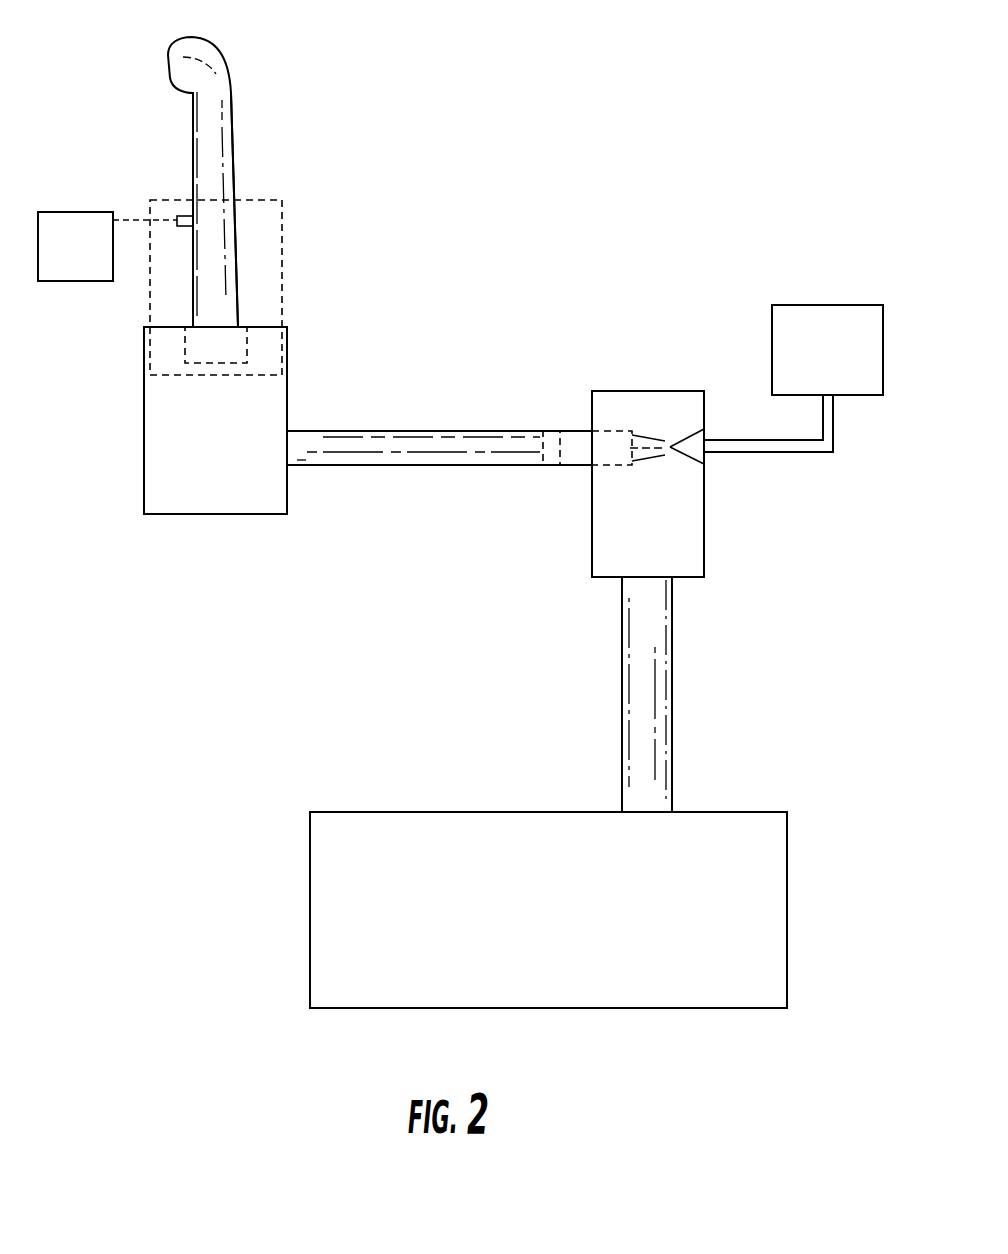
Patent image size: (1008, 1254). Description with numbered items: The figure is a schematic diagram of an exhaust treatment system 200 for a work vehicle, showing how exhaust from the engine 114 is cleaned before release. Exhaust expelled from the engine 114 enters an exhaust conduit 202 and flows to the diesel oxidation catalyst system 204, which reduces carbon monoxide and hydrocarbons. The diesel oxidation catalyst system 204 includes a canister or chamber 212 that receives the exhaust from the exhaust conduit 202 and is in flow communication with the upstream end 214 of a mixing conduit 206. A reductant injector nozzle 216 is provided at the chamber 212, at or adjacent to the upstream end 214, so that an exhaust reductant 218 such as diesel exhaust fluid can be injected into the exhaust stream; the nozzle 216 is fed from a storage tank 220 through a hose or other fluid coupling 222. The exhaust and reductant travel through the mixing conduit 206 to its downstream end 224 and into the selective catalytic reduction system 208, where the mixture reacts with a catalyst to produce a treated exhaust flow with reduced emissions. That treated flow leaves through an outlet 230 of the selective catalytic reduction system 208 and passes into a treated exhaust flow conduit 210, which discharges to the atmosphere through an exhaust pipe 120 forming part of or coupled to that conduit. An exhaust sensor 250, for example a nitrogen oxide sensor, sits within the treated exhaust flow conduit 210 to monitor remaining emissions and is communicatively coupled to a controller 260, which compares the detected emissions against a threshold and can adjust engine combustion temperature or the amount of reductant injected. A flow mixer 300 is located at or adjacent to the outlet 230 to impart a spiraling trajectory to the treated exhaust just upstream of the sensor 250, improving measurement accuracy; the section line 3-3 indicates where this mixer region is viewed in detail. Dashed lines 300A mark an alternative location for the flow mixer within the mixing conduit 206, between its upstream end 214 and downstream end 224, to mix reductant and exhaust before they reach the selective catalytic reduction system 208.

The exhaust treatment system 200 is at (688, 228).
The exhaust pipe 120 is at (195, 165).
The treated exhaust flow conduit 210 is at (237, 250).
The exhaust sensor 250 is at (185, 213).
The controller 260 is at (92, 262).
The section line 3-3 is at (258, 198).
The flow mixer 300 is at (247, 348).
The outlet 230 is at (212, 328).
The selective catalytic reduction (SCR) system 208 is at (232, 452).
The mixing conduit 206 is at (410, 430).
The downstream end 224 is at (289, 443).
The dashed lines 300A is at (543, 449).
The chamber 212 is at (590, 522).
The upstream end 214 is at (612, 431).
The reductant injector nozzle 216 is at (692, 430).
The exhaust reductant 218 is at (645, 458).
The fluid coupling 222 is at (807, 452).
The storage tank 220 is at (844, 365).
The diesel oxidation catalyst (DOC) system 204 is at (788, 553).
The exhaust conduit 202 is at (672, 712).
The engine 114 is at (565, 925).